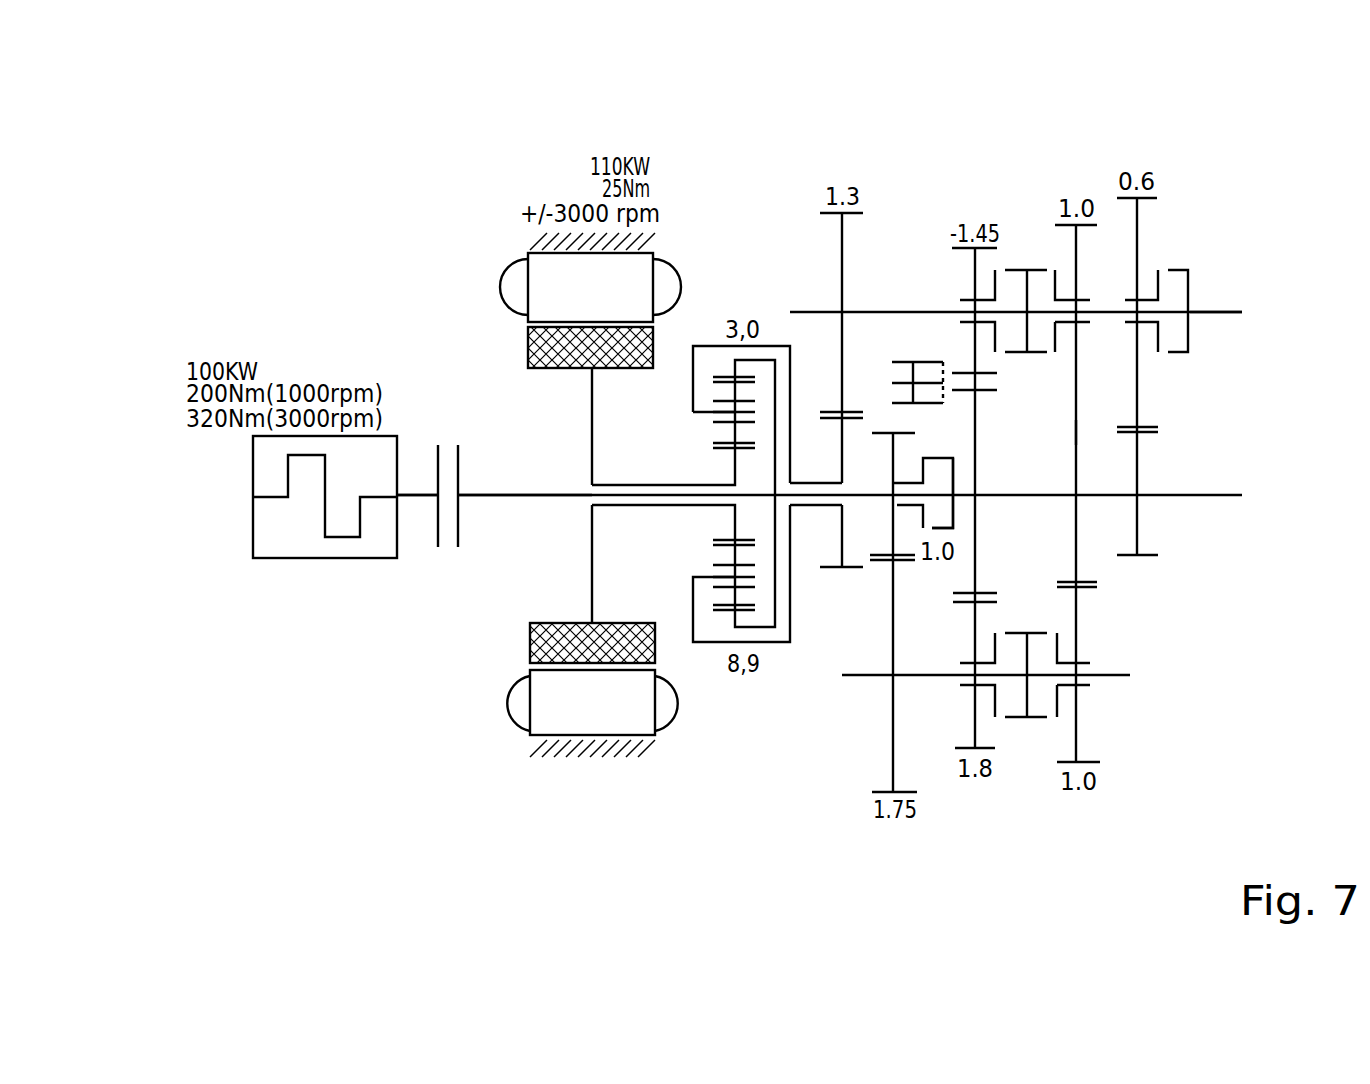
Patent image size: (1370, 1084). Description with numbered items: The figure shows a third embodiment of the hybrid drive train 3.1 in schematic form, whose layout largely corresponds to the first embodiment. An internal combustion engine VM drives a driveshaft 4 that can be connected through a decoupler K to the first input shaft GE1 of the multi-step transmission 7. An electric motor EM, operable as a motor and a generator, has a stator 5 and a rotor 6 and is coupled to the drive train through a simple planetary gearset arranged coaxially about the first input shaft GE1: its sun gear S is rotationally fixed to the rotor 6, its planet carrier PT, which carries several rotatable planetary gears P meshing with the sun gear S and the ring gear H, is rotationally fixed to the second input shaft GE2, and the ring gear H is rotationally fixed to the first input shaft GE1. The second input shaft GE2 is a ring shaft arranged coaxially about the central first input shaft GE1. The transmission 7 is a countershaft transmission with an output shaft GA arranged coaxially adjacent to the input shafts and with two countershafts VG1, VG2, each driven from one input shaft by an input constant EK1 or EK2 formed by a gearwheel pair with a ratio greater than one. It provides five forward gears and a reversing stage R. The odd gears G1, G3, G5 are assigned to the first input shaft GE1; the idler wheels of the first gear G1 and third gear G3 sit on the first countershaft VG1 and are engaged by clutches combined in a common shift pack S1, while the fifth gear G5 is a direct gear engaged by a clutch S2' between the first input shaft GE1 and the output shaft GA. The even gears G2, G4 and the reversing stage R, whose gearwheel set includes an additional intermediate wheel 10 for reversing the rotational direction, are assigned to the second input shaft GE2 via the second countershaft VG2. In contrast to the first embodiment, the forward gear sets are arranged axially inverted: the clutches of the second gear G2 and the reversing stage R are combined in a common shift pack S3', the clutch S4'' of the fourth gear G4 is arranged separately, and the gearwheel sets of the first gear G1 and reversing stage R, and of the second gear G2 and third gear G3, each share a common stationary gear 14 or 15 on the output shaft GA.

The internal combustion engine VM is at (292, 515).
The driveshaft 4 is at (422, 495).
The decoupler K is at (445, 562).
The first input shaft GE1 is at (515, 493).
The rotor 6 is at (528, 342).
The stator 5 is at (550, 283).
The electric motor EM is at (481, 275).
The hybrid drive train 3.1 is at (460, 665).
The planet carrier PT is at (693, 397).
The sun gear S is at (733, 520).
The planetary gears P is at (733, 557).
The ring gear H is at (765, 628).
The second input shaft GE2 is at (798, 505).
The multi-step transmission 7 is at (813, 268).
The second input constant EK2 is at (843, 176).
The intermediate wheel 10 is at (913, 360).
The first input constant EK1 is at (875, 697).
The fifth gear G5 is at (926, 574).
The clutch S2' is at (983, 678).
The reversing stage R is at (976, 210).
The common stationary gear 14 is at (975, 457).
The first gear G1 is at (997, 777).
The common shift pack S3' is at (1186, 389).
The common shift pack S1 is at (1029, 630).
The second gear G2 is at (1077, 186).
The common stationary gear 15 is at (1077, 433).
The third gear G3 is at (1102, 793).
The fourth gear G4 is at (1139, 163).
The clutch of the fourth gear S4'' is at (1219, 215).
The second countershaft VG2 is at (1210, 310).
The output shaft GA is at (1177, 495).
The first countershaft VG1 is at (1105, 672).